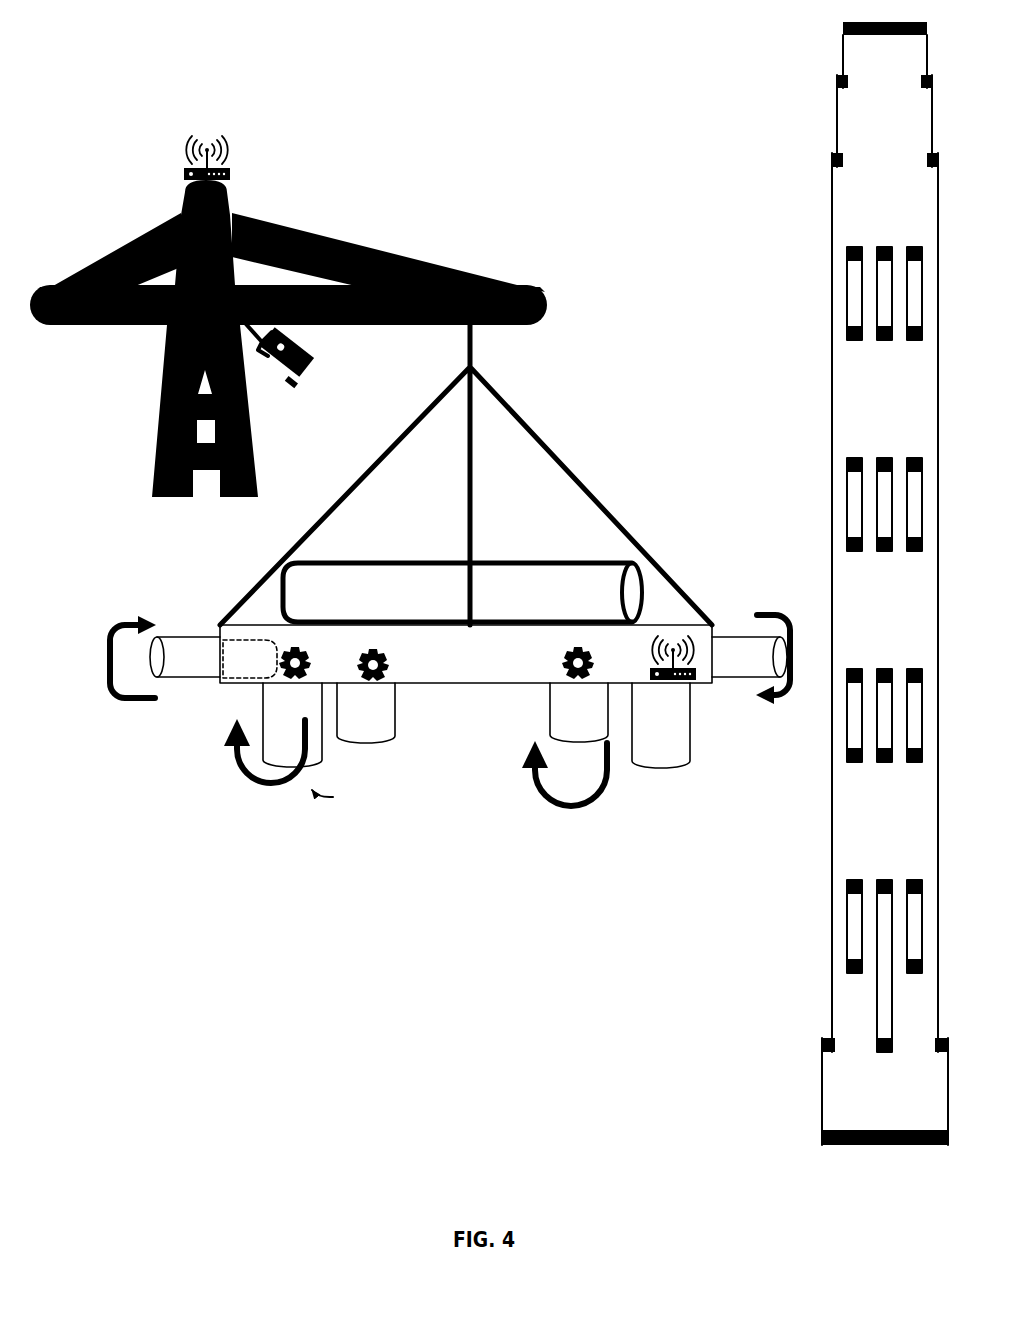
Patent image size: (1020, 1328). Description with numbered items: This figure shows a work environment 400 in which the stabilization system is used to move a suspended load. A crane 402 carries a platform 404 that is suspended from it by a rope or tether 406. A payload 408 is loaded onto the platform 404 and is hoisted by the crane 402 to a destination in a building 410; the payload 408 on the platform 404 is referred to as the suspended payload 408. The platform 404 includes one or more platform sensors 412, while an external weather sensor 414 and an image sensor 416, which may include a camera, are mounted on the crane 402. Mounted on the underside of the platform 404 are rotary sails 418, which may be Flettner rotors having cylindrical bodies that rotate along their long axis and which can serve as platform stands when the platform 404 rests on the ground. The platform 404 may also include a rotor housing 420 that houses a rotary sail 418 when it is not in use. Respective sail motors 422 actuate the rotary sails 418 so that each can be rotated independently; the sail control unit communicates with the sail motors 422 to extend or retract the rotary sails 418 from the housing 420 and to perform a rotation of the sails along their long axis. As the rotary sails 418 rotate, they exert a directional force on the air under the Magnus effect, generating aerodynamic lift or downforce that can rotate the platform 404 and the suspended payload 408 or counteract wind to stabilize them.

The work environment 400 is at (333, 76).
The crane 402 is at (120, 236).
The platform 404 is at (460, 673).
The rope or tether 406 is at (553, 412).
The payload 408 is at (393, 605).
The building 410 is at (893, 205).
The platform sensor 412 is at (701, 688).
The external weather sensor 414 is at (180, 161).
The image sensor 416 is at (318, 364).
The rotary sail 418 is at (398, 736).
The rotor housing 420 is at (236, 647).
The sail motor 422 is at (548, 660).